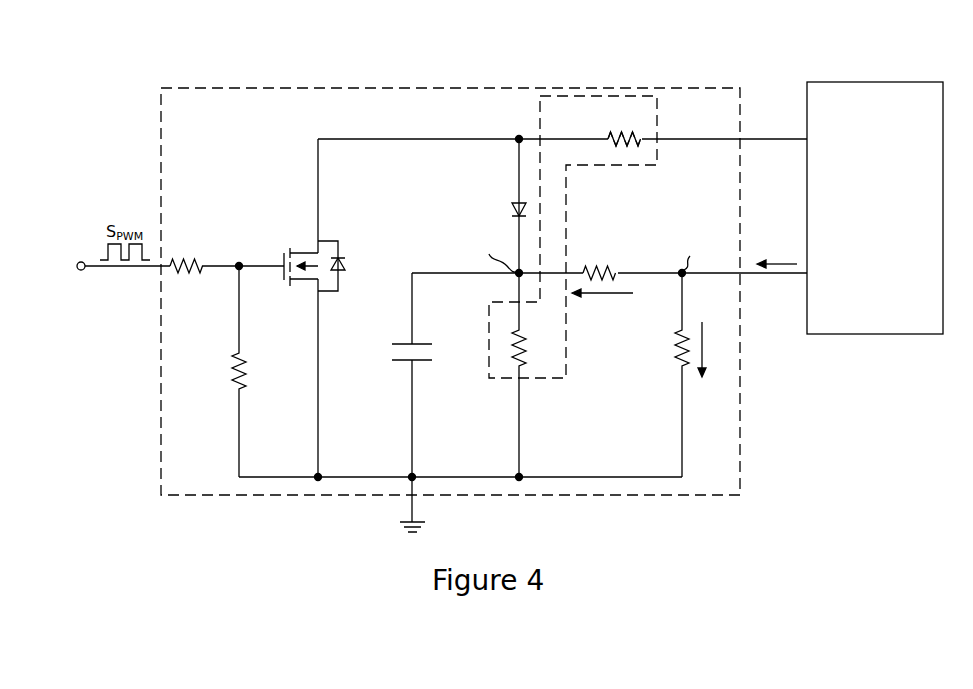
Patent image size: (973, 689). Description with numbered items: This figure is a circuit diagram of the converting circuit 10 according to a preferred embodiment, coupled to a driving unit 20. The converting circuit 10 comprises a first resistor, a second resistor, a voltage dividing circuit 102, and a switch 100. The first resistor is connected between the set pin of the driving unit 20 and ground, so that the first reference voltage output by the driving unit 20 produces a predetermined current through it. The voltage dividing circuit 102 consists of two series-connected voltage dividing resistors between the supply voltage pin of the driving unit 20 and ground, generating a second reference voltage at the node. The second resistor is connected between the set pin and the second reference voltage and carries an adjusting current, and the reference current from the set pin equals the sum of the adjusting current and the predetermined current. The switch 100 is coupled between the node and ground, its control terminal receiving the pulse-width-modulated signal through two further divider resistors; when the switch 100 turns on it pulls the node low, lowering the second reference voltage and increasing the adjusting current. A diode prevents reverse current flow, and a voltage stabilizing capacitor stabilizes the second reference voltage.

The converting circuit 10 is at (690, 88).
The driving unit 20 is at (905, 82).
The switch 100 is at (341, 230).
The voltage dividing circuit 102 is at (657, 150).